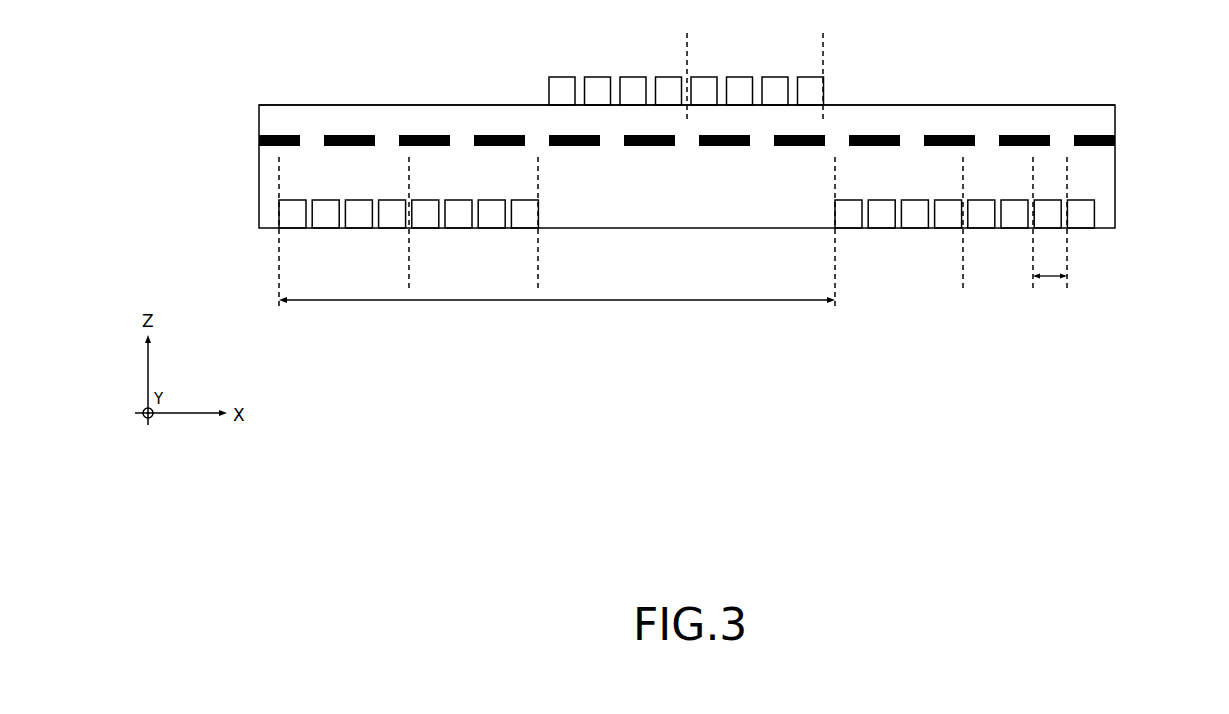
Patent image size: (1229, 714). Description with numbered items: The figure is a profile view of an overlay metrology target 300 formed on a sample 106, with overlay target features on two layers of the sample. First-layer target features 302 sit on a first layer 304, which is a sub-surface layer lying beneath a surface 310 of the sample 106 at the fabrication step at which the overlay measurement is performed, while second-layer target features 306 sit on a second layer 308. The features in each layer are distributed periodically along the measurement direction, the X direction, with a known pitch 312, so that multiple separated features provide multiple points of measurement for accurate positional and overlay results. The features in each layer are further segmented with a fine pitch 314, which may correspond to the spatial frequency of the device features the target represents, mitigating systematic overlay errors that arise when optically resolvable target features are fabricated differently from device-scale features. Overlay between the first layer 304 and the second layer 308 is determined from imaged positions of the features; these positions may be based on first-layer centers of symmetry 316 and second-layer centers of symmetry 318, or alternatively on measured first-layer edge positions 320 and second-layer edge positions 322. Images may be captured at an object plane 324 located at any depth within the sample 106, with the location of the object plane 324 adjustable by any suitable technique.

The overlay metrology target 300 is at (244, 62).
The sample 106 is at (1117, 90).
The first-layer target features 302 is at (393, 219).
The first layer 304 is at (1130, 174).
The second-layer target features 306 is at (598, 77).
The second layer 308 is at (1130, 111).
The surface 310 is at (972, 104).
The pitch 312 is at (558, 300).
The fine pitch 314 is at (1048, 278).
The first-layer centers of symmetry 316 is at (409, 239).
The second-layer centers of symmetry 318 is at (686, 46).
The first-layer edge positions 320 is at (538, 238).
The second-layer edge positions 322 is at (823, 46).
The object plane 324 is at (1115, 140).